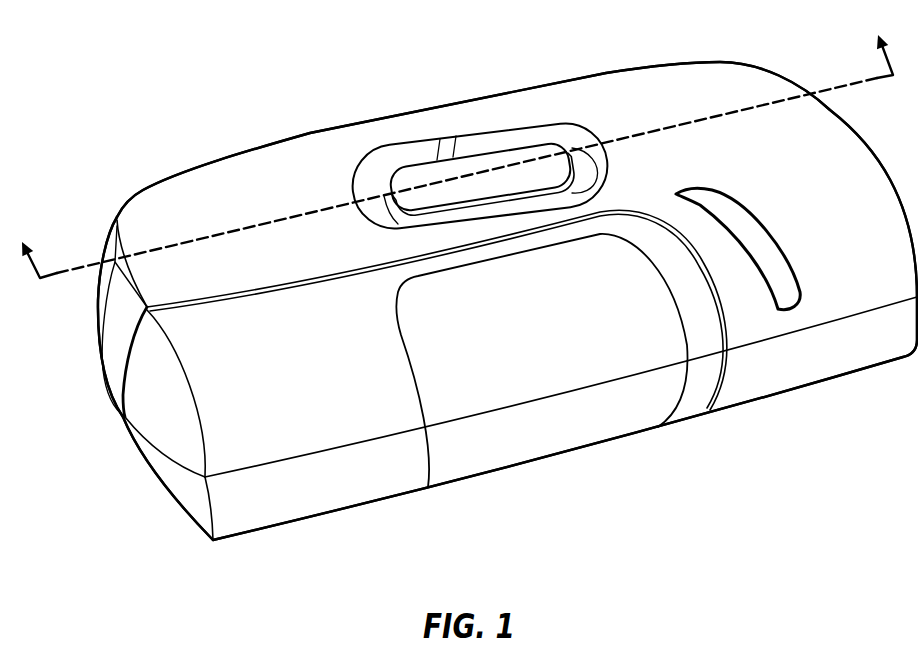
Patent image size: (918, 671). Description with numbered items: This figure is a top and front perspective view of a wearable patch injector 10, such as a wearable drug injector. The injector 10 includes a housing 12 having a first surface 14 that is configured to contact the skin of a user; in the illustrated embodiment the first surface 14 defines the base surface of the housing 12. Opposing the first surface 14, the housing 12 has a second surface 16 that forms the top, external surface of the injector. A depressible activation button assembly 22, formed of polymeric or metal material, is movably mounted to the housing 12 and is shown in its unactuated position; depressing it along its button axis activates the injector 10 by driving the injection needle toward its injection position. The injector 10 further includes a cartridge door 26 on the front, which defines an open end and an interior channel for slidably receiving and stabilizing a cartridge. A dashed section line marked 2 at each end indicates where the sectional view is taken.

The injector 10 is at (282, 62).
The housing 12 is at (622, 95).
The first surface 14 is at (780, 395).
The second surface 16 is at (228, 178).
The depressible activation button assembly 22 is at (437, 175).
The cartridge door 26 is at (333, 417).
The section line 2- 2 is at (452, 144).